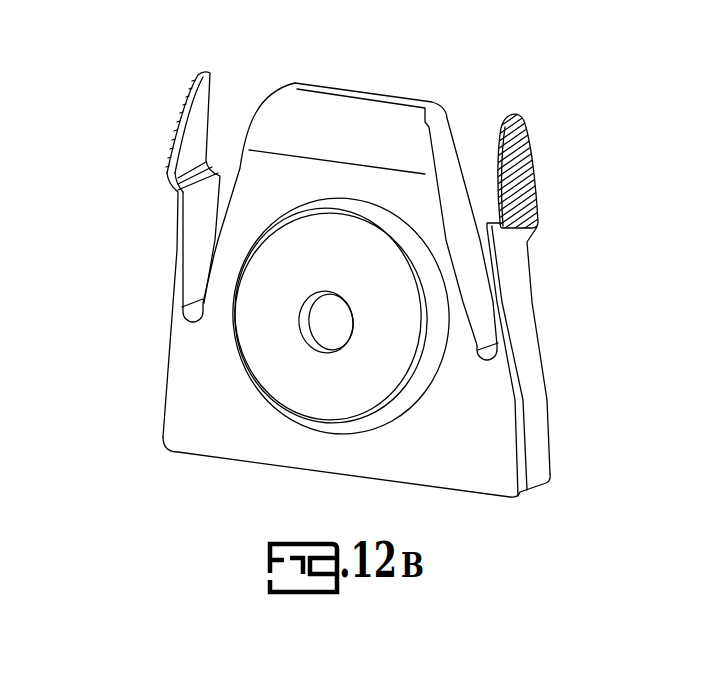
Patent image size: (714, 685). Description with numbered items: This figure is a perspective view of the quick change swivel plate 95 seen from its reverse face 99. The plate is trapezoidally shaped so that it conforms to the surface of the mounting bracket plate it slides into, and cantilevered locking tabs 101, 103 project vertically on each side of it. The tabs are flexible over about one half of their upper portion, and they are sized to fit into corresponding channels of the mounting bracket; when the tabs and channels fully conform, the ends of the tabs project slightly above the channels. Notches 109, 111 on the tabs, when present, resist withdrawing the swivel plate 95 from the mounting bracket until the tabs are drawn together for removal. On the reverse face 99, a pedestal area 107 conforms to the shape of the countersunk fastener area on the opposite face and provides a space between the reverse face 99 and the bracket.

The swivel plate 95 is at (354, 267).
The reverse face 99 is at (507, 472).
The locking tab 101 is at (518, 165).
The locking tab 103 is at (177, 113).
The pedestal area 107 is at (299, 386).
The notch 109 is at (510, 265).
The notch 111 is at (177, 188).